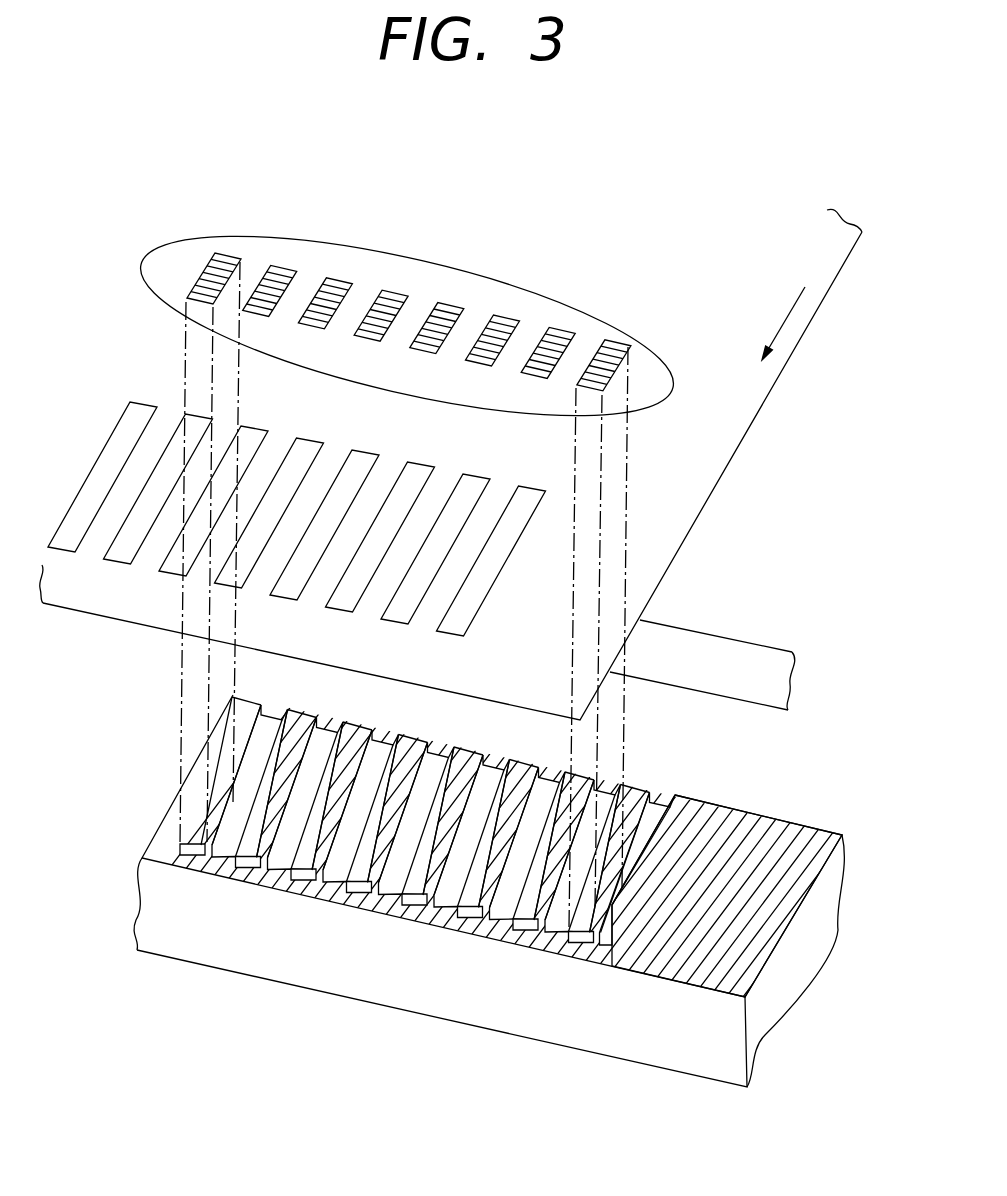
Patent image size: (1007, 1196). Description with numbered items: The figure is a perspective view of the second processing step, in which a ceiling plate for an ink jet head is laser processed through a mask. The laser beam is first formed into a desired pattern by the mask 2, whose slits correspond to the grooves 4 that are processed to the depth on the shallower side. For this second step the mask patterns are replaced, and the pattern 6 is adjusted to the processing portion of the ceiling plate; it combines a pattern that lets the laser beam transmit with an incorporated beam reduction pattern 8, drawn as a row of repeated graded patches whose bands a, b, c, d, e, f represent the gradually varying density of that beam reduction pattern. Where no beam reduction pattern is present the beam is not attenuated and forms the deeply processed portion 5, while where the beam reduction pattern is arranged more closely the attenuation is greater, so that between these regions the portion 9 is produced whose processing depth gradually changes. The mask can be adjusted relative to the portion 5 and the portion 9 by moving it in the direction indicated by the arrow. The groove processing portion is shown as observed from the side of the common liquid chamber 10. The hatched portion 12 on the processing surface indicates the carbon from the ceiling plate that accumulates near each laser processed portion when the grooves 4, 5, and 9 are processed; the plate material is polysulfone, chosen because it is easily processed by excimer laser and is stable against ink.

The mask 2 is at (490, 607).
The grooves 4 is at (663, 804).
The deeply processed portion 5 is at (590, 938).
The pattern 6 is at (549, 294).
The beam reduction pattern 8 is at (634, 344).
The portion whose depth gradually changes 9 is at (605, 908).
The common liquid chamber 10 is at (782, 760).
The hatched portion 12 is at (525, 935).
The gradation region a is at (188, 294).
The gradation region b is at (200, 289).
The gradation region c is at (204, 281).
The gradation region d is at (208, 273).
The gradation region e is at (212, 266).
The gradation region f is at (230, 256).